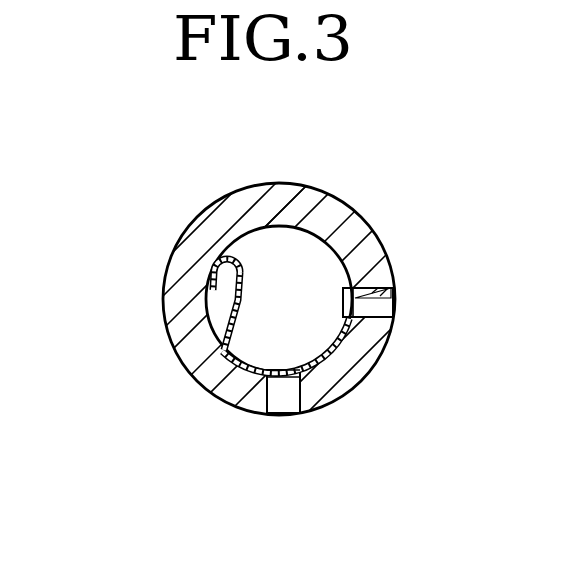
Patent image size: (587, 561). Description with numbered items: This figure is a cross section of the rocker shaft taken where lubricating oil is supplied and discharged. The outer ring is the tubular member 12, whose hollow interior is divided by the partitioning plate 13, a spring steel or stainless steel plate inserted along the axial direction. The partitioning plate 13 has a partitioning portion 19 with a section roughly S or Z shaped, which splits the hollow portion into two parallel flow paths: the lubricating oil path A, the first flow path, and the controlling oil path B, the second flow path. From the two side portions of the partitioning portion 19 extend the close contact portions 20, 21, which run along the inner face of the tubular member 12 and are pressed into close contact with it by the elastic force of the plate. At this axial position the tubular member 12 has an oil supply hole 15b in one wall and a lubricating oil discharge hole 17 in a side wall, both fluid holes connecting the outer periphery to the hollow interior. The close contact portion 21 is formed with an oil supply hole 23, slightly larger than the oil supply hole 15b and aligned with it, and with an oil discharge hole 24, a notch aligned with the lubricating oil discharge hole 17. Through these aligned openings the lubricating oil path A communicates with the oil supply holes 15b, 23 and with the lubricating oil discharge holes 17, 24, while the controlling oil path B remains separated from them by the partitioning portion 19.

The tubular member 12 is at (324, 190).
The partitioning plate 13 is at (250, 291).
The lubricating oil discharge hole 17 is at (383, 300).
The oil discharge hole 24 is at (355, 298).
The close contact portion 21 is at (357, 340).
The oil supply hole 23 is at (288, 375).
The oil supply hole 15b is at (278, 402).
The partitioning portion 19 is at (225, 318).
The close contact portion 20 is at (212, 281).
The lubricating oil path A is at (277, 240).
The controlling oil path B is at (183, 342).